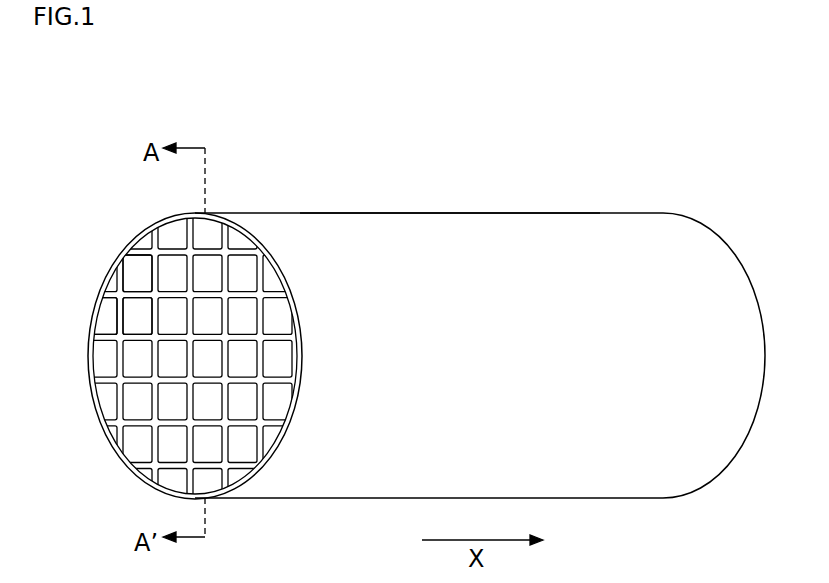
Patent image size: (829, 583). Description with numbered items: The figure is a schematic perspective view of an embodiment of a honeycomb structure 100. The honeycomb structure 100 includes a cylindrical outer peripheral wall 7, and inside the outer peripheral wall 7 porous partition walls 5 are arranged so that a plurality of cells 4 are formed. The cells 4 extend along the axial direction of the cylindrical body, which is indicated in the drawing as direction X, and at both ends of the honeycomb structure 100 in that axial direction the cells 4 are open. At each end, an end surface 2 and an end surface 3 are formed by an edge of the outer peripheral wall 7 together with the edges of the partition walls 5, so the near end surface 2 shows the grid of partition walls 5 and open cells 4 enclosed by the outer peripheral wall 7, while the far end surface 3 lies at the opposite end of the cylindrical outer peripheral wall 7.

The honeycomb structure 100 is at (649, 97).
The end surface 2 is at (156, 221).
The end surface 3 is at (663, 212).
The cell 4 is at (138, 276).
The partition wall 5 is at (133, 298).
The outer peripheral wall 7 is at (521, 250).